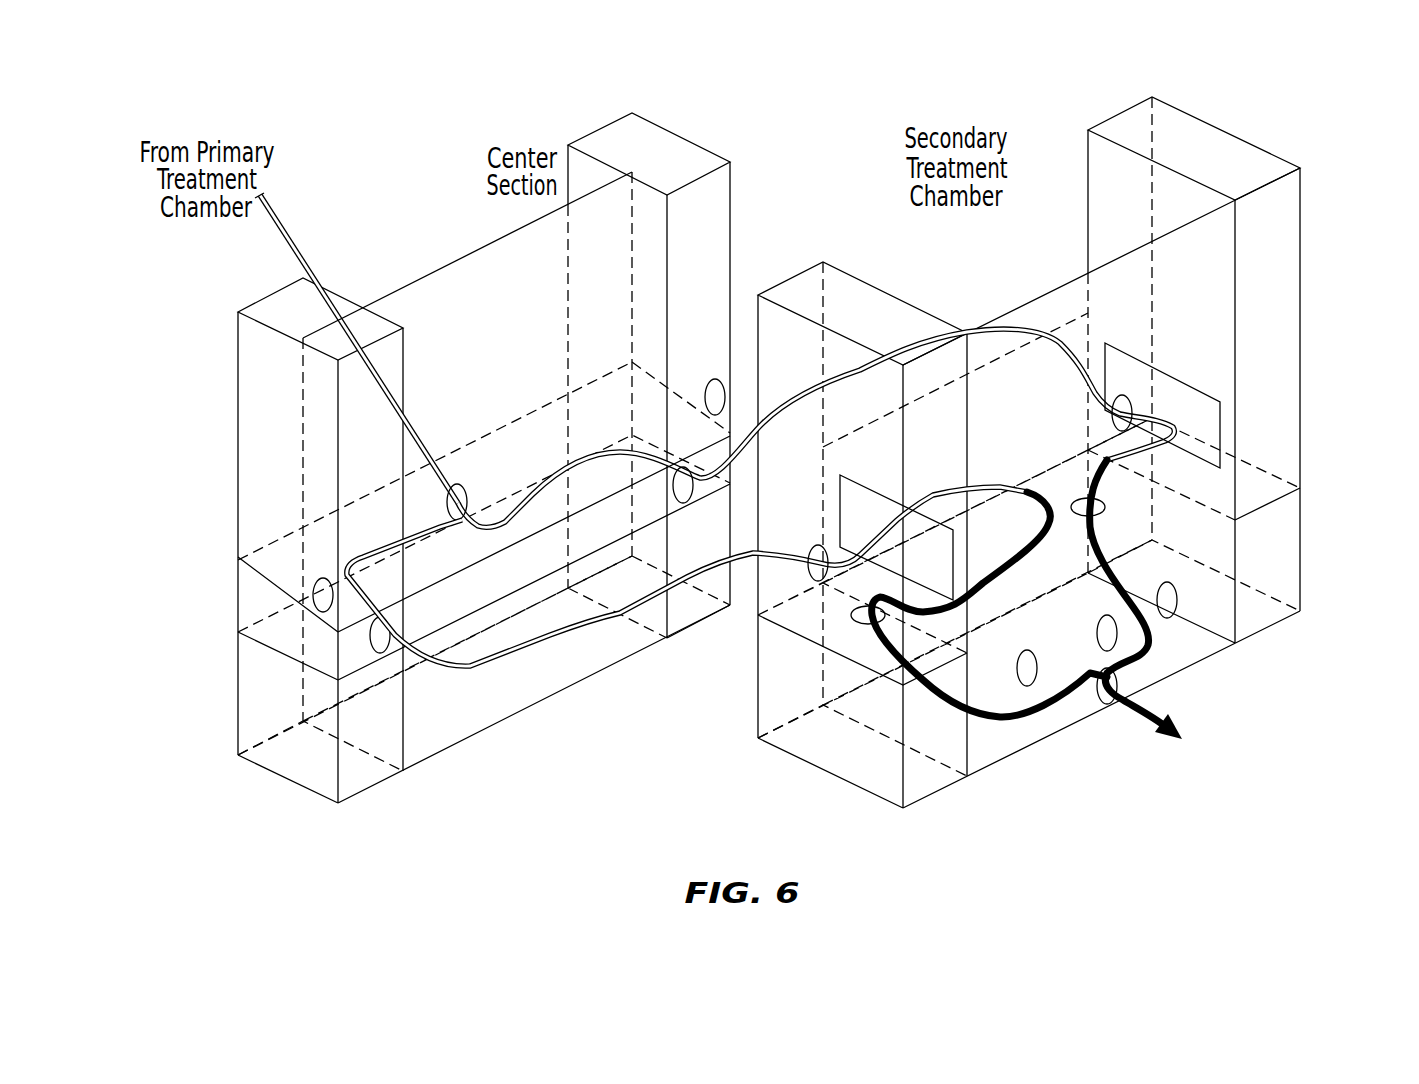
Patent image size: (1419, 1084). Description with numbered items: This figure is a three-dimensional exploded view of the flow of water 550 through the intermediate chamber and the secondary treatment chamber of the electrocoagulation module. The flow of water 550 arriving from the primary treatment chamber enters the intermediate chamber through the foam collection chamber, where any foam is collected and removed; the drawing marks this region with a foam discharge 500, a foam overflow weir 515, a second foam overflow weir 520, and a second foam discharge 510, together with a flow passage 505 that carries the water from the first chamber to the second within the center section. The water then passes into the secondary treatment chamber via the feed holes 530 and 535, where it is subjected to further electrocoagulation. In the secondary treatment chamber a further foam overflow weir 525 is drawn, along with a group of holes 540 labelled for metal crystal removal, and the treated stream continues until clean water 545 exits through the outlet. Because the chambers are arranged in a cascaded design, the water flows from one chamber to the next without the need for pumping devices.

The foam discharge 500 is at (313, 590).
The flow passage from 1 to 2 505 is at (683, 485).
The foam discharge 510 is at (718, 388).
The foam overflow weir 515 is at (442, 288).
The foam overflow weir 520 is at (509, 449).
The foam overflow weir 525 is at (952, 484).
The feed hole 530 is at (814, 568).
The feed hole 535 is at (1185, 403).
The holes for metal crystal removal 540 is at (1037, 668).
The clean water 545 is at (1164, 624).
The flow of water 550 is at (324, 270).